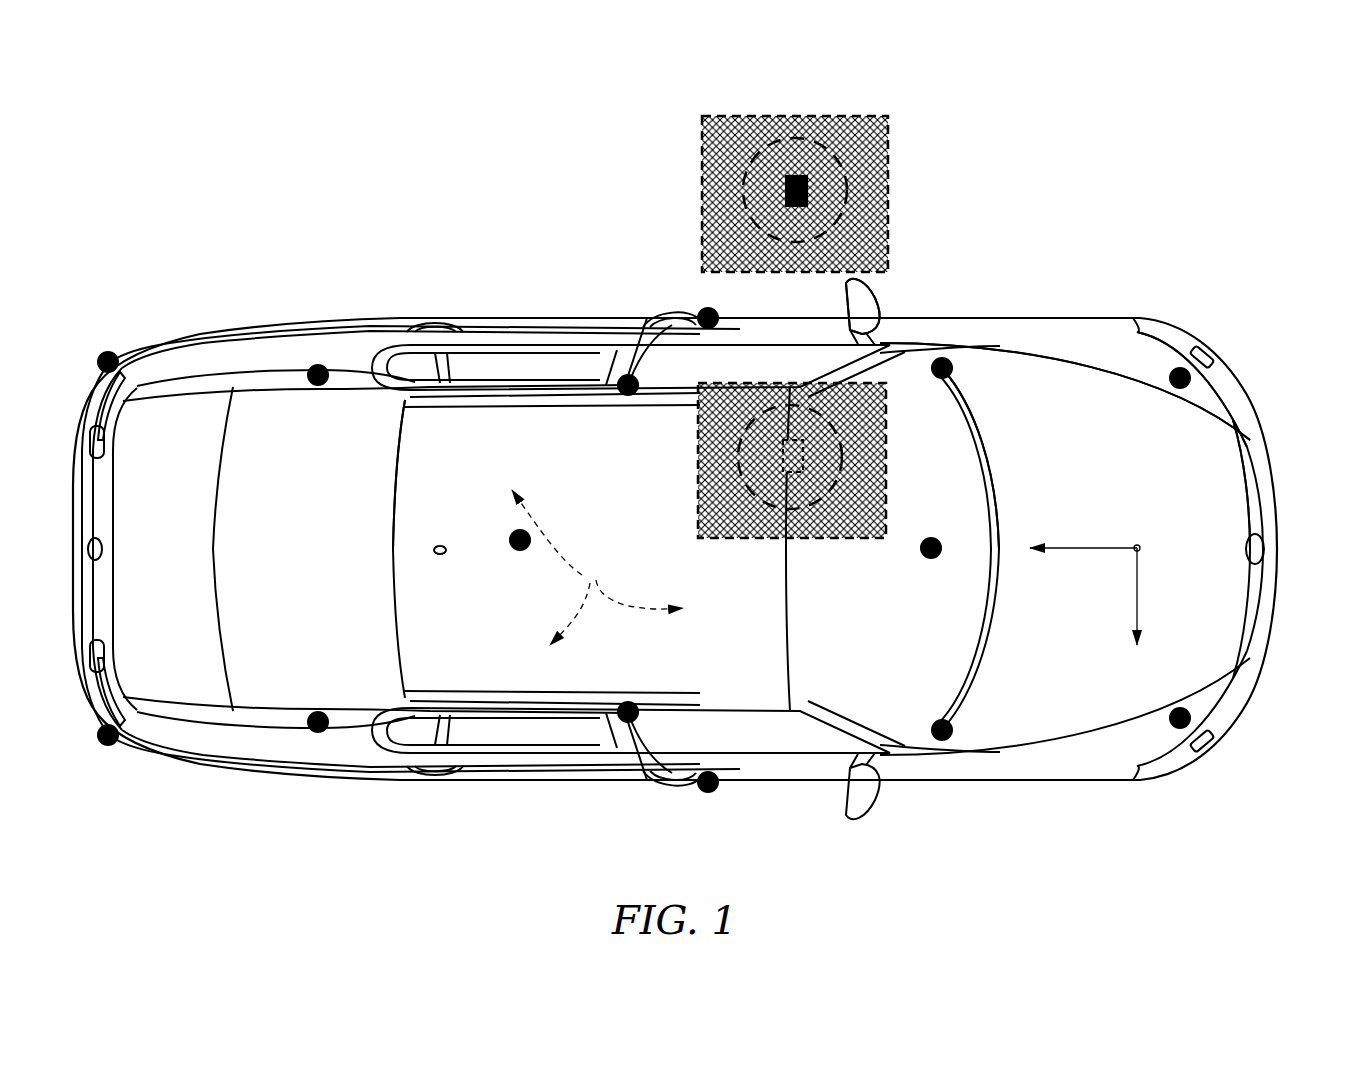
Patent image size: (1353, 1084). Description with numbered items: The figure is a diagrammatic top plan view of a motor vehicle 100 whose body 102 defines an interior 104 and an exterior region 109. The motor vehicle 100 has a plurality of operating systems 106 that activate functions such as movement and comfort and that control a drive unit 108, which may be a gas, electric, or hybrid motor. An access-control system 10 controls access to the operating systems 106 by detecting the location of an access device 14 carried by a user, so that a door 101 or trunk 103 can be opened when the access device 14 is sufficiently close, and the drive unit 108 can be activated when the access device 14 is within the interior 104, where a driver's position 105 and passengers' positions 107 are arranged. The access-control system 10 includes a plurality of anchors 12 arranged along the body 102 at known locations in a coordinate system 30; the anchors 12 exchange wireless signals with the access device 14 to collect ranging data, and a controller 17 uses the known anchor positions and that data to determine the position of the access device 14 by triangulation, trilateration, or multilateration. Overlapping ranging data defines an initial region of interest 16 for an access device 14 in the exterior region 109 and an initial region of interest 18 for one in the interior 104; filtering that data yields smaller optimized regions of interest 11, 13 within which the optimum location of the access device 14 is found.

The access-control system 10 is at (655, 207).
The optimized region of interest 11 is at (850, 203).
The anchors 12 is at (700, 300).
The optimized region of interest 13 is at (850, 458).
The access device 14 is at (818, 172).
The initial region of interest 16 is at (698, 148).
The controller 17 is at (1008, 447).
The initial region of interest 18 is at (892, 449).
The coordinate system 30 is at (1160, 598).
The motor vehicle 100 is at (1163, 187).
The door 101 is at (825, 318).
The body 102 is at (1117, 318).
The trunk 103 is at (162, 437).
The interior 104 is at (517, 375).
The driver's position 105 is at (698, 468).
The operating systems 106 is at (1047, 443).
The passengers' positions 107 is at (597, 567).
The drive unit 108 is at (1203, 470).
The exterior region 109 is at (353, 204).